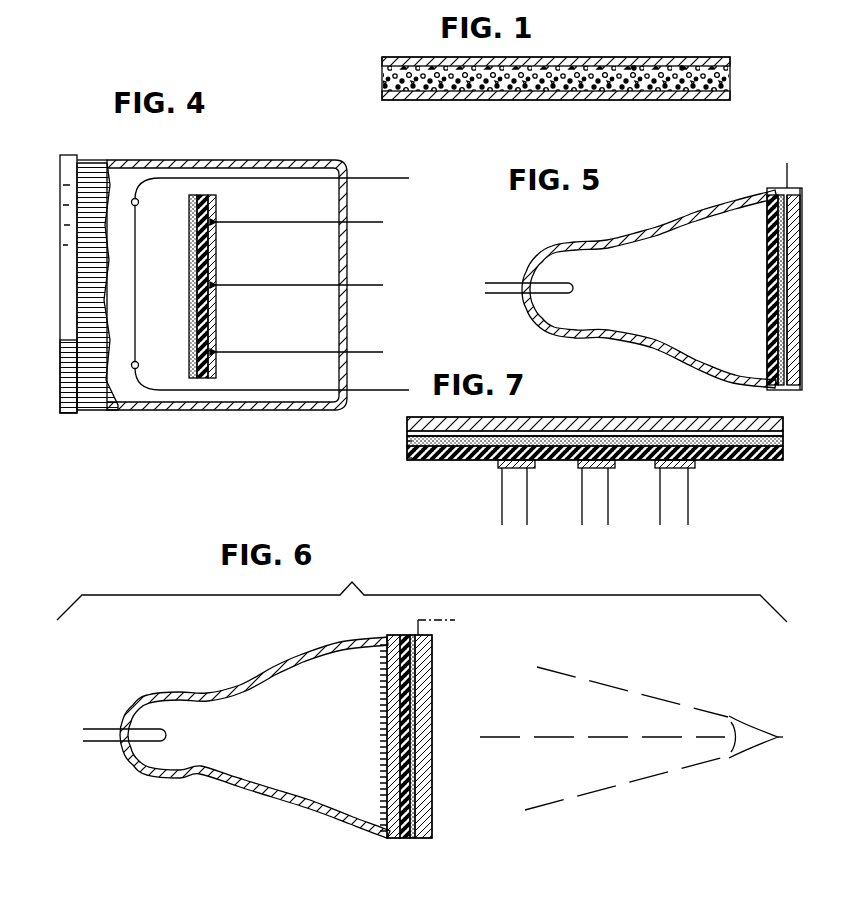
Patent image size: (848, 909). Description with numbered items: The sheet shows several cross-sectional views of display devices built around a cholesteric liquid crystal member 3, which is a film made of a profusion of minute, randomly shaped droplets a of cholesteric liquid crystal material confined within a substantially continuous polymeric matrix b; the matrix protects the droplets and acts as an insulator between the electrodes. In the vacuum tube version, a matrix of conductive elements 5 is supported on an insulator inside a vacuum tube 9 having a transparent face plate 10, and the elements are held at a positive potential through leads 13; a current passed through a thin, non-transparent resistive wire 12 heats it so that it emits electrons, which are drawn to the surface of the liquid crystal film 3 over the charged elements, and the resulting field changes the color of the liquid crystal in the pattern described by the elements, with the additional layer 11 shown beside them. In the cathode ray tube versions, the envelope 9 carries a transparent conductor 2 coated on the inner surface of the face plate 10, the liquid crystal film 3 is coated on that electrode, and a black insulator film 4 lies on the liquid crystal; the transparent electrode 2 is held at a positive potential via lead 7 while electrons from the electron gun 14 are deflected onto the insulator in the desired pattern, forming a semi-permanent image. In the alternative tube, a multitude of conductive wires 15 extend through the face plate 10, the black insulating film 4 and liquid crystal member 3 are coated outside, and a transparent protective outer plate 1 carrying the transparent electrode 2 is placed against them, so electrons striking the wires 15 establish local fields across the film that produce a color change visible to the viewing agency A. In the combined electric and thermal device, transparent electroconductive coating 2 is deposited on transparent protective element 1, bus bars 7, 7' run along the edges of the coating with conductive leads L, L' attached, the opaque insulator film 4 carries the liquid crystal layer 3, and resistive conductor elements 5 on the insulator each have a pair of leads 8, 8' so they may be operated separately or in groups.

In FIG. 7, the transparent protective layer 1 is at (693, 431).
In FIG. 6, the transparent protective layer 1 is at (432, 643).
In FIG. 5, the transparent electrode 2 is at (800, 318).
In FIG. 7, the transparent electrode 2 is at (785, 428).
In FIG. 6, the transparent electrode 2 is at (432, 680).
In FIG. 1, the cholesteric liquid crystal member 3 is at (733, 58).
In FIG. 4, the cholesteric liquid crystal member 3 is at (190, 195).
In FIG. 5, the cholesteric liquid crystal member 3 is at (770, 365).
In FIG. 7, the cholesteric liquid crystal member 3 is at (612, 436).
In FIG. 6, the cholesteric liquid crystal member 3 is at (412, 840).
In FIG. 4, the black insulating film 4 is at (216, 305).
In FIG. 5, the black insulating film 4 is at (770, 215).
In FIG. 7, the black insulating film 4 is at (752, 462).
In FIG. 6, the black insulating film 4 is at (400, 840).
In FIG. 4, the conductive elements 5 is at (216, 222).
In FIG. 7, the conductive elements 5 is at (498, 463).
In FIG. 5, the upper electrode lead 7 is at (770, 165).
In FIG. 7, the upper electrode lead 7 is at (612, 460).
In FIG. 6, the upper electrode lead 7 is at (429, 615).
In FIG. 7, the lower electrode lead 7' is at (390, 450).
In FIG. 7, the resistive element lead 8 is at (562, 496).
In FIG. 7, the resistive element lead 8' is at (607, 496).
In FIG. 4, the vacuum tube envelope 9 is at (215, 411).
In FIG. 5, the vacuum tube envelope 9 is at (655, 340).
In FIG. 6, the vacuum tube envelope 9 is at (255, 737).
In FIG. 4, the face plate 10 is at (60, 246).
In FIG. 5, the face plate 10 is at (798, 236).
In FIG. 6, the face plate 10 is at (390, 637).
In FIG. 4, the insulating layer 11 is at (216, 325).
In FIG. 4, the resistive wire 12 is at (142, 278).
In FIG. 4, the leads 13 is at (270, 222).
In FIG. 5, the electron gun 14 is at (498, 293).
In FIG. 6, the electron gun 14 is at (90, 730).
In FIG. 6, the conductive wires 15 is at (385, 727).
In FIG. 1, the liquid crystal droplets a is at (634, 65).
In FIG. 1, the polymeric matrix b is at (682, 65).
In FIG. 7, the conductive lead L is at (612, 443).
In FIG. 7, the conductive lead L' is at (391, 427).
In FIG. 6, the viewing agency A is at (752, 735).